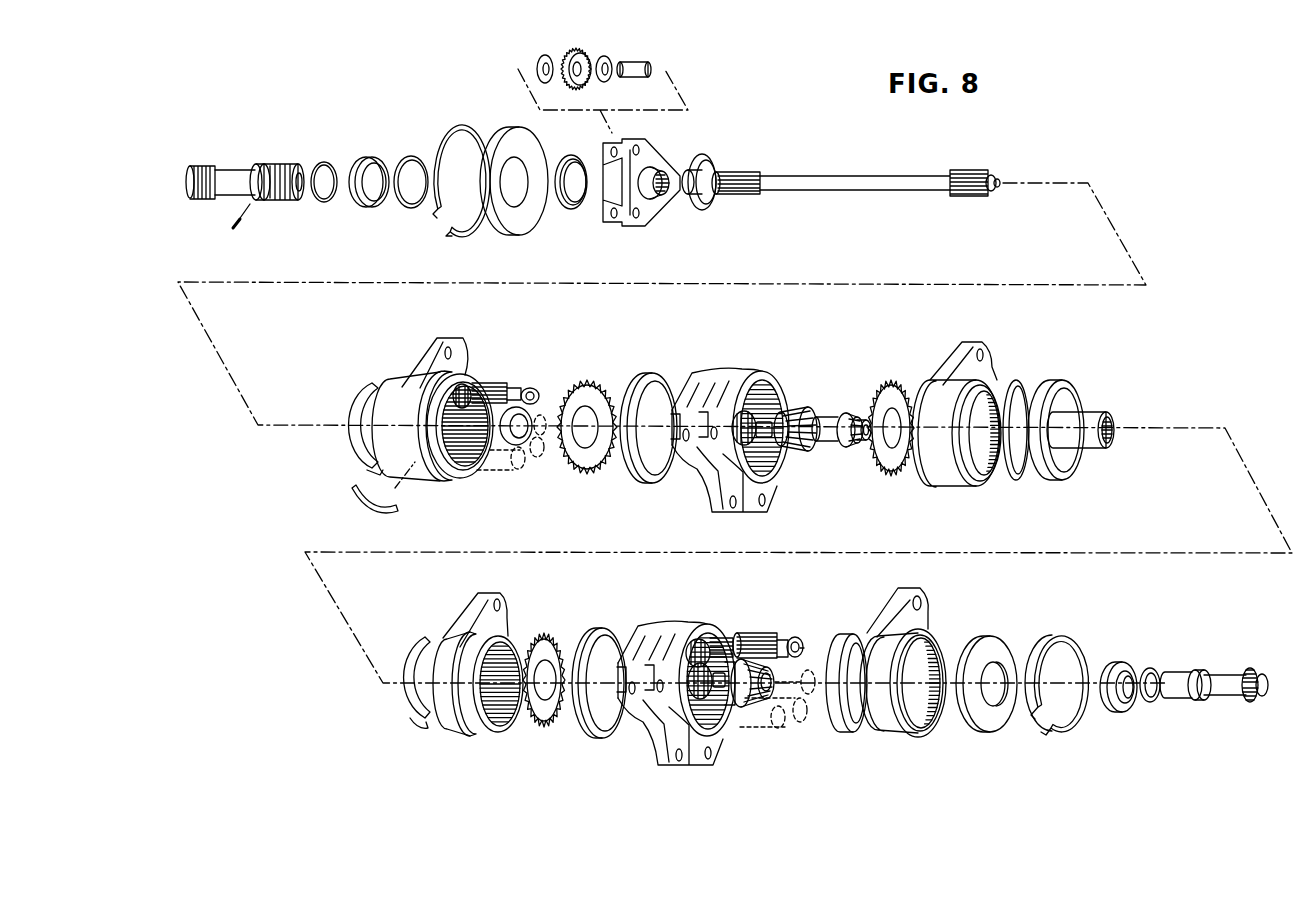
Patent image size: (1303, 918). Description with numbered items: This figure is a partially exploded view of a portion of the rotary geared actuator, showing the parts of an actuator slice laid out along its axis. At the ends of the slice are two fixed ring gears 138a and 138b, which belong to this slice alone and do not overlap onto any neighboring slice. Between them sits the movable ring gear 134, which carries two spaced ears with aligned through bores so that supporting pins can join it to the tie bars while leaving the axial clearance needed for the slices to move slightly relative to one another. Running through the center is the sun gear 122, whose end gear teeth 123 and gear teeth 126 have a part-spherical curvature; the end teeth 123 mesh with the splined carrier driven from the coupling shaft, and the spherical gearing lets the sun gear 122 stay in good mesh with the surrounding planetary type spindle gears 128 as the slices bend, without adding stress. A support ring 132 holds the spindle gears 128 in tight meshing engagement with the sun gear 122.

The sun gear 122 is at (826, 417).
The end gear teeth 123 is at (745, 421).
The gear teeth 126 is at (800, 448).
The spindle gears 128 is at (520, 387).
The support ring 132 is at (543, 372).
The movable ring gear 134 is at (722, 382).
The fixed ring gear 138a is at (430, 366).
The fixed ring gear 138b is at (987, 353).